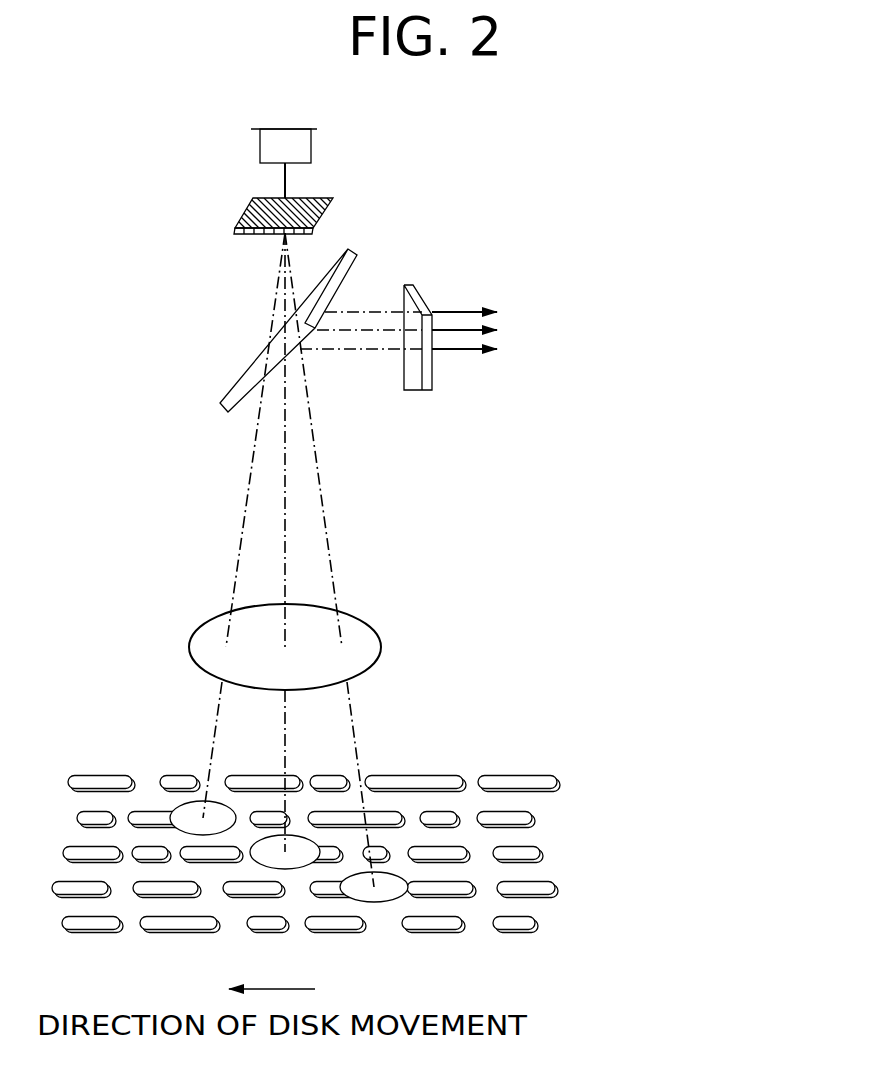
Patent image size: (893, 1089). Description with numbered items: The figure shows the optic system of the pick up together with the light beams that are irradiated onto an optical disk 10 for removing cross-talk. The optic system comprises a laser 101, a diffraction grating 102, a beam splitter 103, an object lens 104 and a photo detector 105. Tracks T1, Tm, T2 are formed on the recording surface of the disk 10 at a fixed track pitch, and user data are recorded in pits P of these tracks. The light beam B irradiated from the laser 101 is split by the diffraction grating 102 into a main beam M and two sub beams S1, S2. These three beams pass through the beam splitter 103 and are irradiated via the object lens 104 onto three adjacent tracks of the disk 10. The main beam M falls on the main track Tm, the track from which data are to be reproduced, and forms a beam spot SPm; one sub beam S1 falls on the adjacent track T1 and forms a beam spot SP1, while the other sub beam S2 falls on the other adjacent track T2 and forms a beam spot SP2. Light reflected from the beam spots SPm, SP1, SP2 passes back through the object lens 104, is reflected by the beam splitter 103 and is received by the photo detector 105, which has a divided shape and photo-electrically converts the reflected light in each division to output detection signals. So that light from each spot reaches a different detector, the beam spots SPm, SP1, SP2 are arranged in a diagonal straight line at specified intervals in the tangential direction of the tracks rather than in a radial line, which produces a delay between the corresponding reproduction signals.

The laser 101 is at (265, 140).
The light beam B is at (283, 178).
The diffraction grating 102 is at (240, 215).
The beam splitter 103 is at (247, 367).
The object lens 104 is at (382, 647).
The photo detector 105 is at (407, 362).
The main beam M is at (285, 465).
The sub beam S1 is at (323, 497).
The sub beam S2 is at (245, 495).
The optical disk 10 is at (600, 718).
The pits P is at (497, 775).
The beam spot SP1 is at (378, 903).
The beam spot SP2 is at (178, 813).
The beam spot SPm is at (297, 837).
The track T1 is at (341, 894).
The track T2 is at (354, 828).
The main track Tm is at (348, 861).